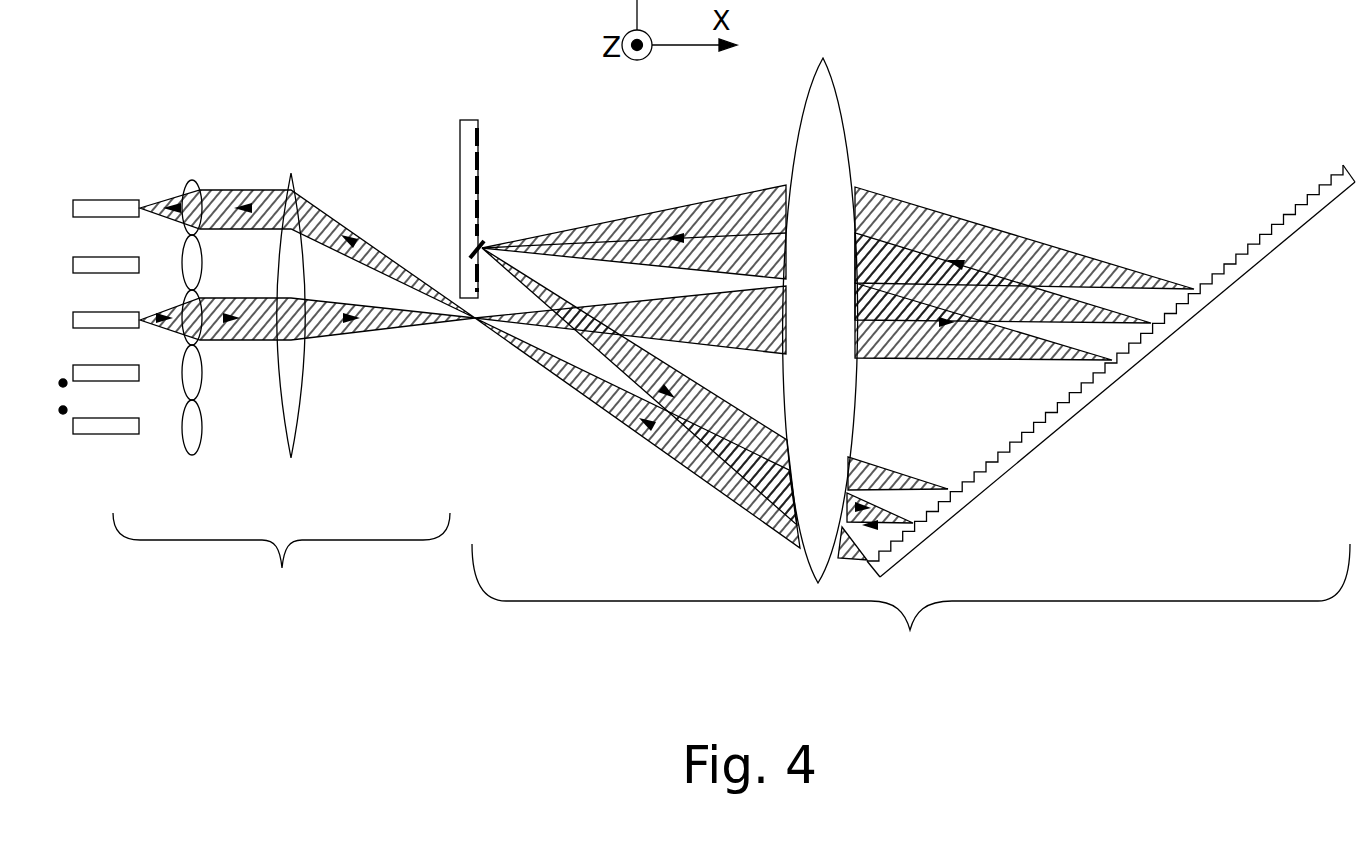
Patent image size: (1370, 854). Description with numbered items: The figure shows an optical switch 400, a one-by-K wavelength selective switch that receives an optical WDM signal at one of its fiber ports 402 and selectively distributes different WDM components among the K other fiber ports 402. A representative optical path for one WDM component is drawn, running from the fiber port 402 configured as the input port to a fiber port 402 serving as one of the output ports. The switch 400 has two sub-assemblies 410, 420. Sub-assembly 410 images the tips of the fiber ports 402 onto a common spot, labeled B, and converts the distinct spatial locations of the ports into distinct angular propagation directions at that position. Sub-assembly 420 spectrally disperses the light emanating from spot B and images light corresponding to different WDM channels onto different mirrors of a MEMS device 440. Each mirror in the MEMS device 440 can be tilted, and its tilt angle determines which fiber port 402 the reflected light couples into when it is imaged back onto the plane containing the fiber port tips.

The optical switch 400 is at (127, 776).
The fiber ports 402 is at (100, 172).
The sub-assembly 410 is at (281, 421).
The sub-assembly 420 is at (910, 630).
The MEMS device 440 is at (470, 120).